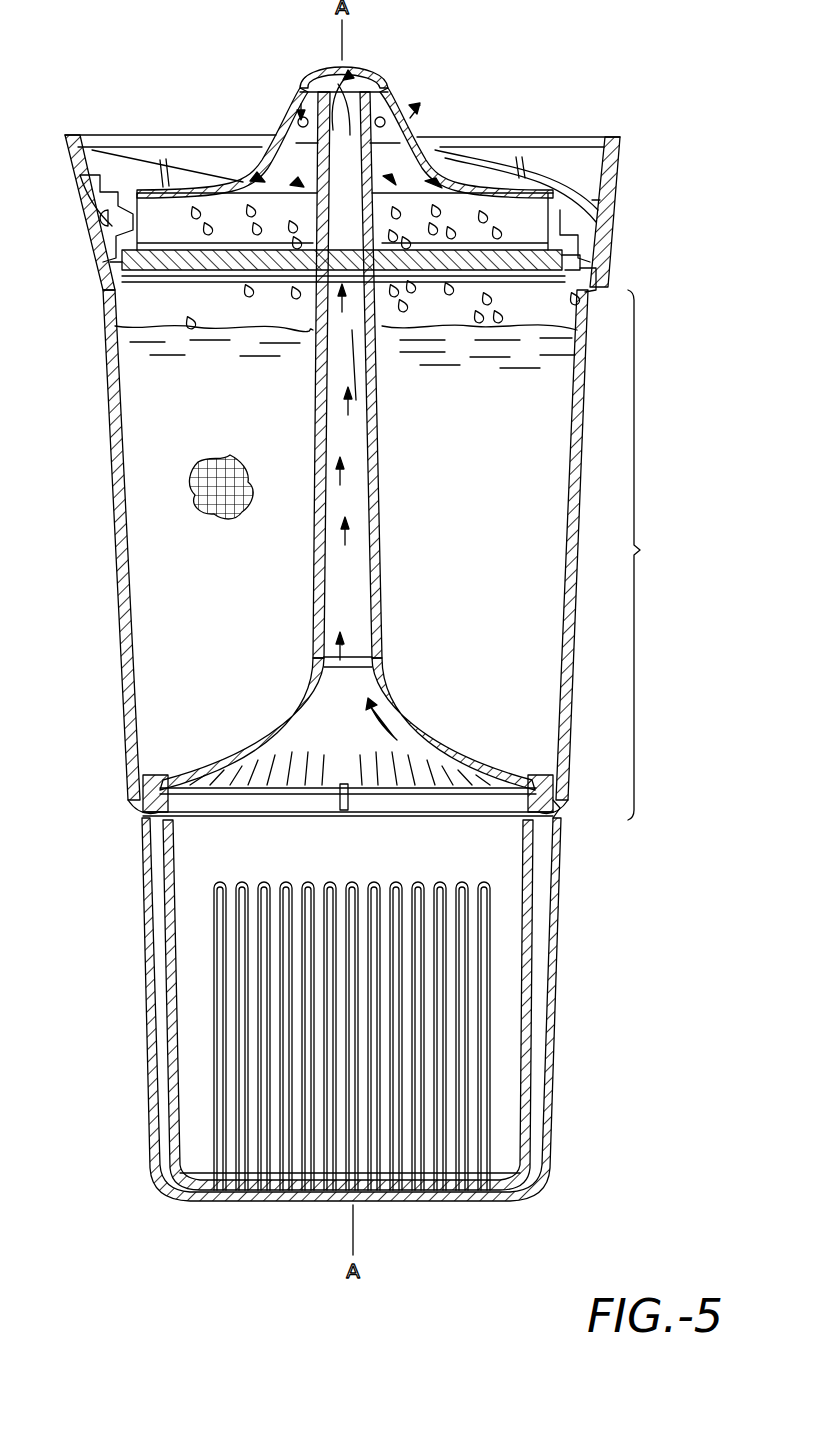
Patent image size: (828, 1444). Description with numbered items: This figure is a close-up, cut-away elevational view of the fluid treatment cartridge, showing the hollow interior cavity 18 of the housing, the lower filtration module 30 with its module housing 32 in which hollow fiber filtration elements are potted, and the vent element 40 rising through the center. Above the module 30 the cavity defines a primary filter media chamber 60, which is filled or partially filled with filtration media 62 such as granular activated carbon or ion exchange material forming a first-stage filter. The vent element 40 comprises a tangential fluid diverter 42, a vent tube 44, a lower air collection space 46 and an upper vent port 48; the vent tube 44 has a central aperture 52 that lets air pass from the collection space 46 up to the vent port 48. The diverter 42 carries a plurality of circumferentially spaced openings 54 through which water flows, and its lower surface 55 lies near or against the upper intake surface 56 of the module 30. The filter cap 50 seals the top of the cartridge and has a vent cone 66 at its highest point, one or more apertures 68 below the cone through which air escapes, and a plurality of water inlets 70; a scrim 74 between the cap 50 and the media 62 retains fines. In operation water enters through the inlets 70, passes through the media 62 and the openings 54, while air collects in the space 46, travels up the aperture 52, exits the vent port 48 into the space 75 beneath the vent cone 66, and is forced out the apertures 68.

The cavity 18 is at (651, 555).
The lower filtration module 30 is at (505, 980).
The module housing 32 is at (525, 1033).
The vent element 40 is at (428, 410).
The tangential fluid diverter 42 is at (437, 728).
The vent tube 44 is at (382, 476).
The lower air collection space 46 is at (358, 722).
The upper vent port 48 is at (342, 72).
The filter cap 50 is at (430, 178).
The central aperture 52 is at (360, 368).
The openings 54 is at (422, 785).
The lower surface 55 is at (190, 795).
The upper intake surface 56 is at (485, 803).
The primary filter media chamber 60 is at (135, 492).
The filtration media 62 is at (222, 458).
The vent cone 66 is at (296, 78).
The apertures 68 is at (296, 120).
The water inlets 70 is at (296, 185).
The scrim 74 is at (200, 270).
The space 75 is at (352, 78).